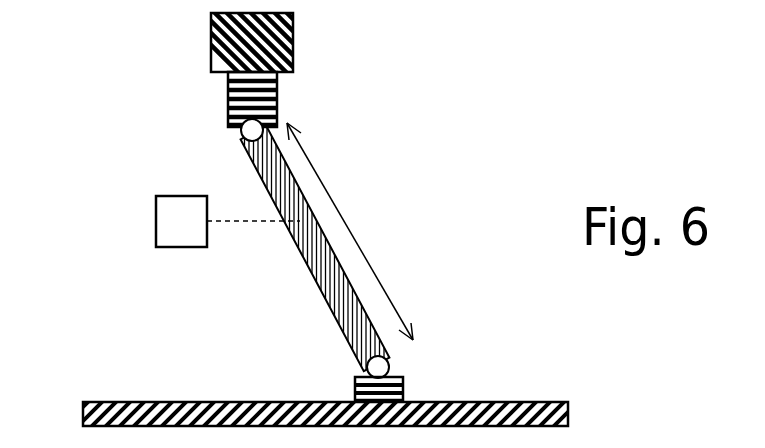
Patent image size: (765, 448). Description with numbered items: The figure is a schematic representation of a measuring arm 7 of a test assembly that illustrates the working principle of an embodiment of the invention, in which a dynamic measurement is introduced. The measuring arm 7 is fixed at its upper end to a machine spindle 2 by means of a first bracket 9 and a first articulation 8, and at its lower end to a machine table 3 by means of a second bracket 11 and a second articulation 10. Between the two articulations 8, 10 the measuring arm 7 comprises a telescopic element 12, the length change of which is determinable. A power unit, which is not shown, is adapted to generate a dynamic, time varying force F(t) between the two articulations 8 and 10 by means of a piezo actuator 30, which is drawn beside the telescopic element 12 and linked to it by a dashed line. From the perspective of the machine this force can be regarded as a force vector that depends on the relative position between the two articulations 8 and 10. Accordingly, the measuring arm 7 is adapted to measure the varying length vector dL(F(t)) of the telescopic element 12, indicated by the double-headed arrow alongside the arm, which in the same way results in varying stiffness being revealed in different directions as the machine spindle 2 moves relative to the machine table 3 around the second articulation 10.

The machine spindle 2 is at (285, 45).
The first bracket 9 is at (233, 93).
The first articulation 8 is at (252, 130).
The measuring arm 7 is at (358, 121).
The piezo actuator 30 is at (165, 232).
The telescopic element 12 is at (322, 255).
The machine table 3 is at (127, 410).
The second articulation 10 is at (378, 367).
The second bracket 11 is at (385, 390).